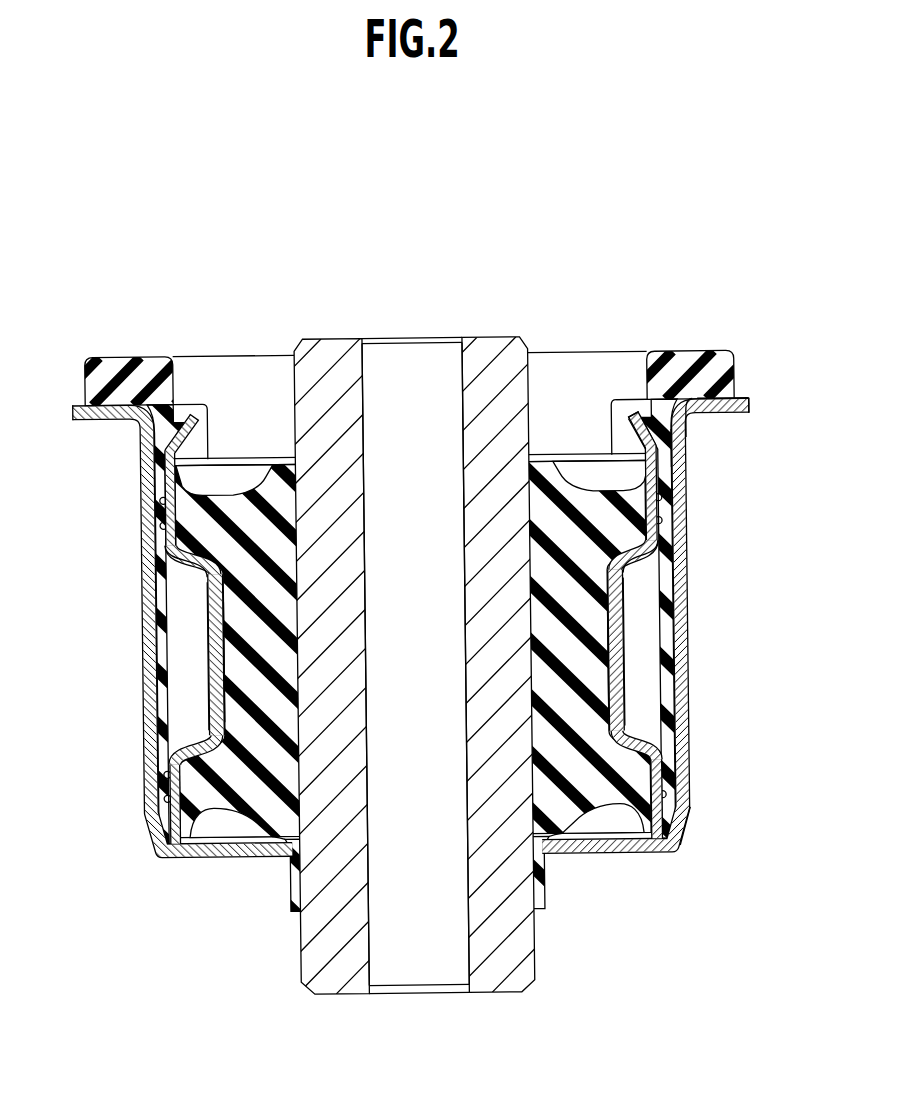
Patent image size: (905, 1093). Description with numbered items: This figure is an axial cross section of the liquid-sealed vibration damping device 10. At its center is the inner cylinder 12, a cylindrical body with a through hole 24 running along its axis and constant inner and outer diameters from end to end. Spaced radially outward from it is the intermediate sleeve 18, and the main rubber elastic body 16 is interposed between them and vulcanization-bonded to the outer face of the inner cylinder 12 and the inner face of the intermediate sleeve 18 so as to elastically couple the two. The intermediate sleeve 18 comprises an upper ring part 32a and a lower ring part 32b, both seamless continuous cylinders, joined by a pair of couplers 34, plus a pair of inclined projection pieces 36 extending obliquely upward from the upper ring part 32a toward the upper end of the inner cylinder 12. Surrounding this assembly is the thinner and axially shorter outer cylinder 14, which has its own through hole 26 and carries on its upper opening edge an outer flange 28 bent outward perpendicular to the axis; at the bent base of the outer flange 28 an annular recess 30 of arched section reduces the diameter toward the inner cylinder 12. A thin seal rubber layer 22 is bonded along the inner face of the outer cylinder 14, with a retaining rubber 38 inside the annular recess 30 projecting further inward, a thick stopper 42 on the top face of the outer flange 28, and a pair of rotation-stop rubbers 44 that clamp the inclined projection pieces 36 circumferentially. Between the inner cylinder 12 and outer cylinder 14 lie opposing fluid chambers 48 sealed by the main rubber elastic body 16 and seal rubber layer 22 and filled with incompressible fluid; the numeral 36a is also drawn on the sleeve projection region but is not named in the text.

The liquid-sealed vibration damping device 10 is at (254, 270).
The inner cylinder 12 is at (488, 346).
The outer cylinder 14 is at (684, 766).
The main rubber elastic body 16 is at (244, 498).
The intermediate sleeve 18 is at (207, 702).
The seal rubber layer 22 is at (160, 630).
The through hole 24 is at (458, 960).
The through hole 26 is at (163, 797).
The outer flange 28 is at (750, 412).
The annular recess 30 is at (686, 420).
The upper ring part 32a is at (686, 520).
The lower ring part 32b is at (676, 811).
The coupler 34 is at (208, 596).
The inclined projection piece 36 is at (631, 423).
The end rubber portion 36a is at (677, 445).
The retaining rubber 38 is at (633, 402).
The stopper 42 is at (741, 376).
The rotation-stop rubber 44 is at (191, 402).
The fluid chamber 48 is at (190, 667).